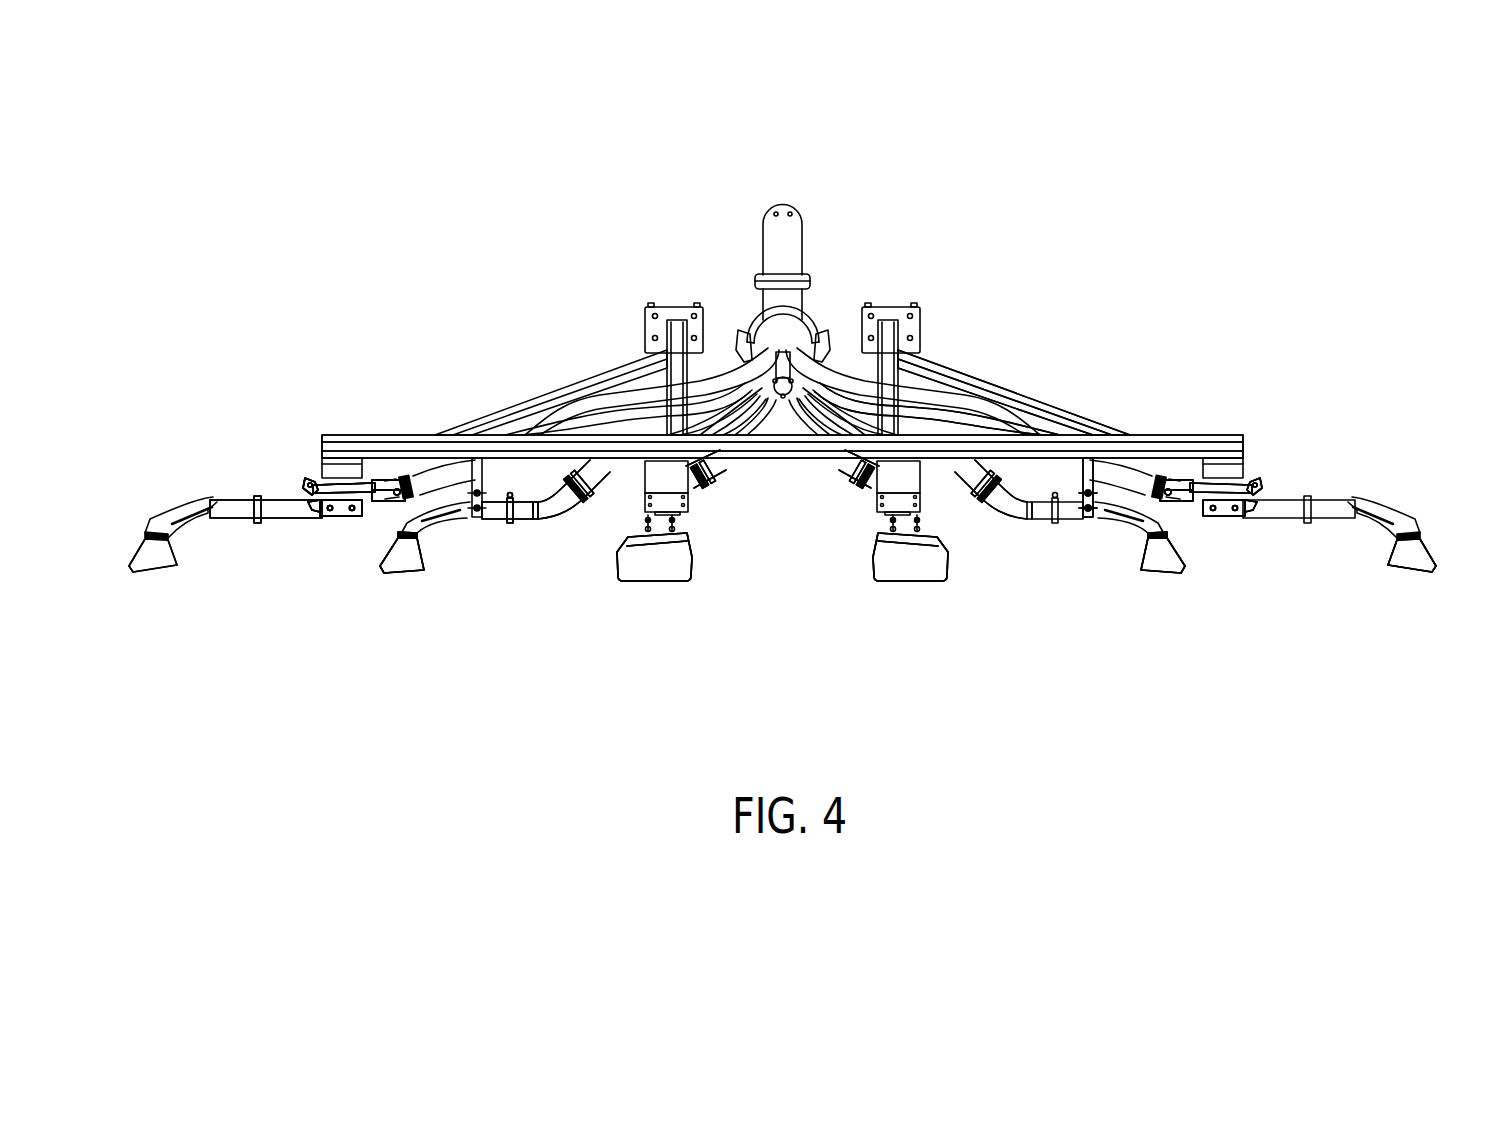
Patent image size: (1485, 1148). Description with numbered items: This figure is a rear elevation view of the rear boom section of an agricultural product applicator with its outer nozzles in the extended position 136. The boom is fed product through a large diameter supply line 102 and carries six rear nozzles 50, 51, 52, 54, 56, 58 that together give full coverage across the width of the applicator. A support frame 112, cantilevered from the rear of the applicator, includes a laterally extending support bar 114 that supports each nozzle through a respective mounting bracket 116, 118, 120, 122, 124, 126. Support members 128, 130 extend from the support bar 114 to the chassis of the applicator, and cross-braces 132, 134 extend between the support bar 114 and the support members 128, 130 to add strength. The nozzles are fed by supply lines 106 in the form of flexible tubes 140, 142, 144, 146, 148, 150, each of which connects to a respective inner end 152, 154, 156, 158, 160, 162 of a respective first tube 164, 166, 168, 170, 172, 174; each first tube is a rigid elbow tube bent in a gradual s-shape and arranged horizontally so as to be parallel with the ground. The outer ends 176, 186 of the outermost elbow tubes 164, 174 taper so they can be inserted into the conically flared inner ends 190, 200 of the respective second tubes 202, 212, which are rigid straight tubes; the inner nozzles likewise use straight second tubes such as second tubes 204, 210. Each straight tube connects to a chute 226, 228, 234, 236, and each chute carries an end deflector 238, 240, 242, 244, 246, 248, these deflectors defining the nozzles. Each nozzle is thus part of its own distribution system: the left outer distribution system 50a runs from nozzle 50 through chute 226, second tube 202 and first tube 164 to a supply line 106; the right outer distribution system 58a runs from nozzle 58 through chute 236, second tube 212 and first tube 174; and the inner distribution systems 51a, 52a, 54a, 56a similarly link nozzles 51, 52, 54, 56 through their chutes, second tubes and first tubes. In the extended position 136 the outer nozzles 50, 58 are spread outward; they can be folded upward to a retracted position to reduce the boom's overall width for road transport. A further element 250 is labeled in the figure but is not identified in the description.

The extended position 136 is at (436, 228).
The supply line 102 is at (770, 235).
The supply lines 106 is at (805, 380).
The support frame 112 is at (888, 320).
The support bar 114 is at (783, 457).
The mounting bracket 116 is at (332, 476).
The mounting bracket 118 is at (478, 482).
The mounting bracket 120 is at (660, 476).
The mounting bracket 122 is at (940, 405).
The mounting bracket 124 is at (1082, 470).
The mounting bracket 126 is at (1236, 477).
The support member 128 is at (678, 320).
The support member 130 is at (905, 333).
The cross-brace 132 is at (557, 398).
The cross-brace 134 is at (1015, 400).
The flexible tube 140 is at (442, 470).
The flexible tube 142 is at (618, 473).
The flexible tube 144 is at (722, 462).
The flexible tube 146 is at (843, 462).
The flexible tube 148 is at (957, 476).
The flexible tube 150 is at (962, 410).
The inner end 152 is at (397, 480).
The inner end 154 is at (578, 503).
The inner end 156 is at (712, 472).
The inner end 158 is at (853, 472).
The inner end 160 is at (983, 503).
The inner end 162 is at (1163, 497).
The first tube 164 is at (368, 512).
The first tube 166 is at (545, 514).
The first tube 168 is at (690, 480).
The first tube 170 is at (875, 480).
The first tube 172 is at (1018, 512).
The first tube 174 is at (1197, 512).
The outer end 176 is at (332, 512).
The outer end 186 is at (1233, 512).
The inner end 190 is at (320, 519).
The inner end 200 is at (1245, 519).
The second tube 202 is at (246, 500).
The second tube 204 is at (497, 510).
The second tube 210 is at (1068, 510).
The second tube 212 is at (1312, 500).
The chute 226 is at (176, 512).
The chute 228 is at (440, 522).
The chute 234 is at (1125, 522).
The chute 236 is at (1382, 510).
The end deflector 238 is at (150, 558).
The end deflector 240 is at (415, 567).
The end deflector 242 is at (628, 575).
The end deflector 244 is at (937, 575).
The end deflector 246 is at (1150, 567).
The end deflector 248 is at (1420, 562).
The pin 250 is at (345, 508).
The rear nozzle 50 is at (163, 558).
The left outer distribution system 50a is at (270, 508).
The rear nozzle 51 is at (405, 567).
The inner distribution system 51a is at (395, 567).
The rear nozzle 52 is at (648, 573).
The inner distribution system 52a is at (670, 577).
The rear nozzle 54 is at (917, 573).
The inner distribution system 54a is at (895, 577).
The rear nozzle 56 is at (1160, 567).
The inner distribution system 56a is at (1170, 567).
The rear nozzle 58 is at (1408, 562).
The right outer distribution system 58a is at (1398, 556).